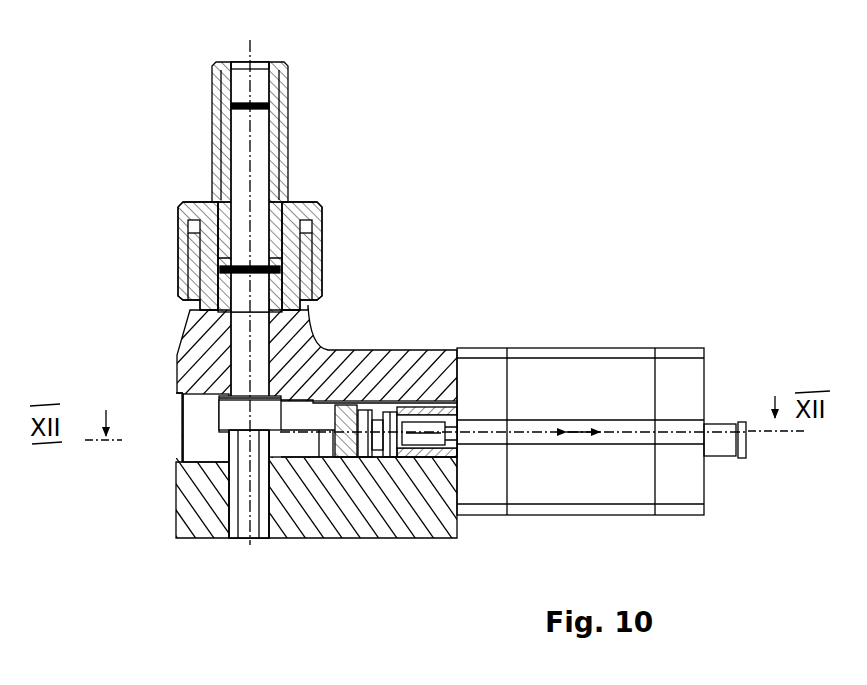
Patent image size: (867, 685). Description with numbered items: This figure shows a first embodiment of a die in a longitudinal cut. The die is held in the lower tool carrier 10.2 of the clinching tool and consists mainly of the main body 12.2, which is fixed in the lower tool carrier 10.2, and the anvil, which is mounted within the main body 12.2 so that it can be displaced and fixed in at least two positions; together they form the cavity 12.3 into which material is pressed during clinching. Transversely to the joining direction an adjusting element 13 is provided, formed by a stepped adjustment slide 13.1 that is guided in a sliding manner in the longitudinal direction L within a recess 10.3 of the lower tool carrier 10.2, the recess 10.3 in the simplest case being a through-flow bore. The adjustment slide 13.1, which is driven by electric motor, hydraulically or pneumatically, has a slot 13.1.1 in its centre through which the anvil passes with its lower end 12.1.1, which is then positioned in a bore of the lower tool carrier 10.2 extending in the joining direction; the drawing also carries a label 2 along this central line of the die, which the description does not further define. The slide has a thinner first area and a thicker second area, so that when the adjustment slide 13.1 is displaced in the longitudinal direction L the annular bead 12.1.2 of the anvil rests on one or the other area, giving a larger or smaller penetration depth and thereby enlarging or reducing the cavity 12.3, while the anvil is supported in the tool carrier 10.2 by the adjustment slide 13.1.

The tube / line 2 is at (258, 172).
The cavity 12.3 is at (252, 63).
The main body 12.2 is at (270, 96).
The annular bead 12.1.2 is at (268, 421).
The lower end 12.1.1 is at (267, 522).
The lower tool carrier 10.2 is at (360, 366).
The recess 10.3 is at (195, 416).
The adjusting element 13 is at (206, 447).
The adjustment slide 13.1 is at (227, 452).
The slot 13.1.1 is at (282, 442).
The longitudinal direction L is at (585, 426).